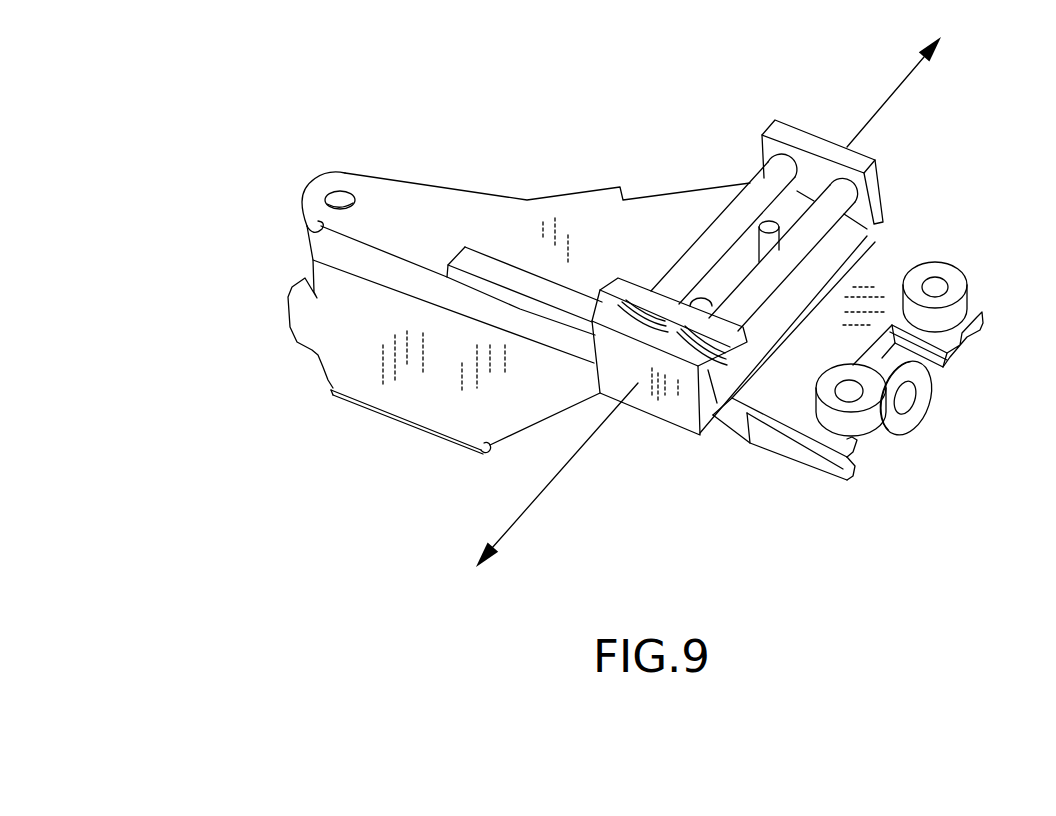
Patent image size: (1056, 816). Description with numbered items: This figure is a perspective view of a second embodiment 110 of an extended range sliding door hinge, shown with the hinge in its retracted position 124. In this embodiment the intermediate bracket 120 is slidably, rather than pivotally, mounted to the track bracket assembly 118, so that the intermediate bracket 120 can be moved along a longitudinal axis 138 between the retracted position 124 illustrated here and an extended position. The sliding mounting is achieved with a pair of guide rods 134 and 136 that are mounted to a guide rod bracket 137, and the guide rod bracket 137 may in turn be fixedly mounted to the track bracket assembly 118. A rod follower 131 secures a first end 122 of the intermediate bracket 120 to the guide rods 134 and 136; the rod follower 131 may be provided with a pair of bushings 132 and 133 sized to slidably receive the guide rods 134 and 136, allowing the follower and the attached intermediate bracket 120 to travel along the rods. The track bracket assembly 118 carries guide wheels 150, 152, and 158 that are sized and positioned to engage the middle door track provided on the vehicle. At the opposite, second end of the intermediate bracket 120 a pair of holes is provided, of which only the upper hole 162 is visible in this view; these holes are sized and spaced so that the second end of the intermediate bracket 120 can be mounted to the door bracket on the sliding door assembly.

The second embodiment of the extended range sliding door hinge 110 is at (145, 195).
The track bracket assembly 118 is at (811, 499).
The intermediate bracket 120 is at (380, 435).
The first end of intermediate bracket 122 is at (658, 195).
The retracted position 124 is at (460, 480).
The rod follower 131 is at (496, 235).
The bushing 132 is at (633, 308).
The bushing 133 is at (718, 369).
The guide rod 134 is at (747, 180).
The guide rod 136 is at (813, 235).
The guide rod bracket 137 is at (882, 173).
The longitudinal axis 138 is at (513, 528).
The guide wheel 150 is at (977, 290).
The guide wheel 152 is at (855, 423).
The guide wheel 158 is at (927, 403).
The upper hole 162 is at (344, 190).